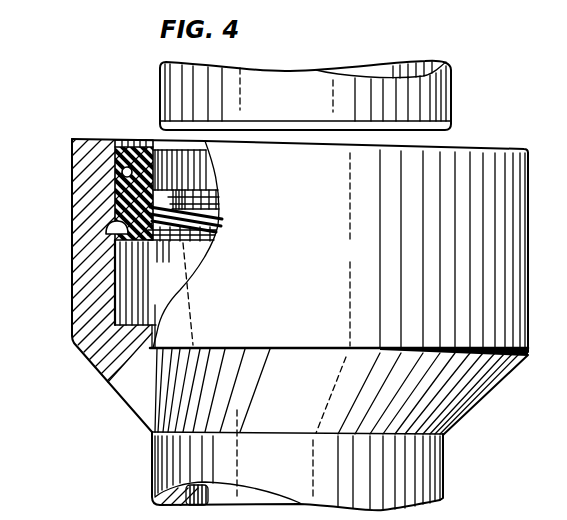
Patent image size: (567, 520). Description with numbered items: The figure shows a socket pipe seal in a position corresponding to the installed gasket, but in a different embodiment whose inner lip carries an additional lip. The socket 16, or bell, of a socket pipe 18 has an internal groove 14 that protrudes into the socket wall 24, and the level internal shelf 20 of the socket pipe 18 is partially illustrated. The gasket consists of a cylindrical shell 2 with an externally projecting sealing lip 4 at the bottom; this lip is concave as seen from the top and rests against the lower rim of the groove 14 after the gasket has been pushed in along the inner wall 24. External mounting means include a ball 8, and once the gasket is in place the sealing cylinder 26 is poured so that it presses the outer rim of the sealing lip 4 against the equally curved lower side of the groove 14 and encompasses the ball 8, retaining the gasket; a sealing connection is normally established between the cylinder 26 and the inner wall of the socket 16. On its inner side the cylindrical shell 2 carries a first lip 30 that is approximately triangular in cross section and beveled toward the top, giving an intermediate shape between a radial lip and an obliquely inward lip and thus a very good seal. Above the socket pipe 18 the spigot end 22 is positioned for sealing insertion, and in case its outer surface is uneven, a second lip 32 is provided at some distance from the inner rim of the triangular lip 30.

The cylindrical shell 2 is at (172, 168).
The sealing lip 4 is at (146, 244).
The ball 8 is at (121, 172).
The internal groove 14 is at (107, 222).
The socket 16 is at (88, 305).
The socket pipe 18 is at (165, 452).
The internal shelf 20 is at (157, 322).
The spigot end 22 is at (426, 100).
The socket wall 24 is at (117, 291).
The sealing cylinder 26 is at (125, 143).
The first lip 30 is at (206, 236).
The second lip 32 is at (188, 191).